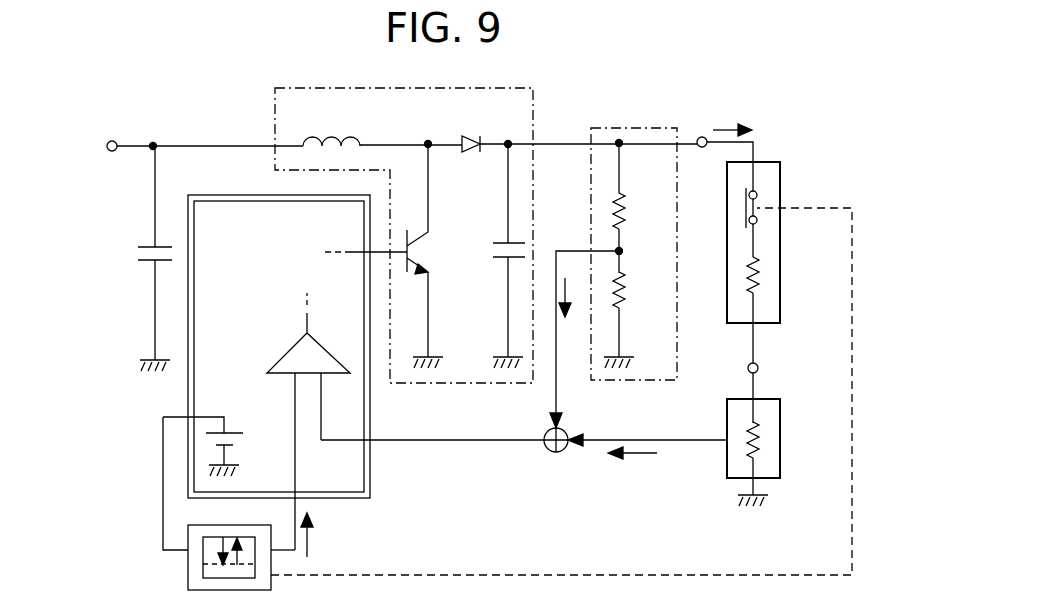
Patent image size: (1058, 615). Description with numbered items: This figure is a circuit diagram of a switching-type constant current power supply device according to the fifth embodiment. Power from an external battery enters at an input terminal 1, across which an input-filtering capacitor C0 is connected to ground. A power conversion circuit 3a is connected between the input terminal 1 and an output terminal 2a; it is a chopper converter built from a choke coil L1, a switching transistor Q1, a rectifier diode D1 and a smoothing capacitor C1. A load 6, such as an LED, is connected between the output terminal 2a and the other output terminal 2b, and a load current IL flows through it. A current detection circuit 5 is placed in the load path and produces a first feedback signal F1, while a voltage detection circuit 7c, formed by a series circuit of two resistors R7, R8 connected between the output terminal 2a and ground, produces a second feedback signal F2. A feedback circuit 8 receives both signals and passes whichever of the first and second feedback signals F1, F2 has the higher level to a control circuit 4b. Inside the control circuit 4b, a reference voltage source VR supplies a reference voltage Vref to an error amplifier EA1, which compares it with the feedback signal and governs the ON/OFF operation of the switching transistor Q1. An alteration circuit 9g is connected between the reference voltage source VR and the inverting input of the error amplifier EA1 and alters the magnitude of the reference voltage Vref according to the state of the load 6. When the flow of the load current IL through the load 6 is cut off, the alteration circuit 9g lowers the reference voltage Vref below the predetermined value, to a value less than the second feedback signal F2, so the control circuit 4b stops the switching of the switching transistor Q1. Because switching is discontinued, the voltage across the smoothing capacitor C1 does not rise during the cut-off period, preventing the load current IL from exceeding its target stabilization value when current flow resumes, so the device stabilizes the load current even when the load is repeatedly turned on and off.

The input terminal 1 is at (112, 140).
The power conversion circuit 3a is at (266, 127).
The choke coil L1 is at (328, 138).
The rectifier diode D1 is at (470, 137).
The input-filtering capacitor C0 is at (137, 257).
The switching transistor Q1 is at (431, 244).
The smoothing capacitor C1 is at (492, 251).
The voltage detection circuit 7c is at (624, 126).
The resistor R7 is at (626, 213).
The resistor R8 is at (626, 293).
The second feedback signal F2 is at (572, 298).
The feedback circuit 8 is at (548, 455).
The first feedback signal F1 is at (640, 456).
The output terminal 2a is at (701, 137).
The load current IL is at (732, 129).
The load 6 is at (782, 194).
The output terminal 2b is at (760, 368).
The current detection circuit 5 is at (782, 442).
The control circuit 4b is at (370, 486).
The error amplifier EA1 is at (282, 356).
The reference voltage source VR is at (228, 430).
The alteration circuit 9g is at (188, 572).
The reference voltage Vref is at (312, 538).